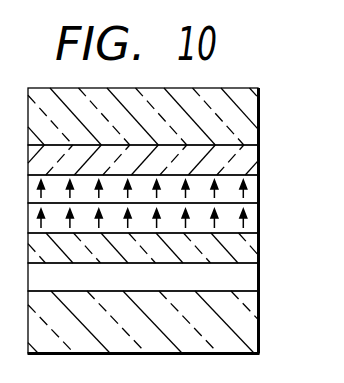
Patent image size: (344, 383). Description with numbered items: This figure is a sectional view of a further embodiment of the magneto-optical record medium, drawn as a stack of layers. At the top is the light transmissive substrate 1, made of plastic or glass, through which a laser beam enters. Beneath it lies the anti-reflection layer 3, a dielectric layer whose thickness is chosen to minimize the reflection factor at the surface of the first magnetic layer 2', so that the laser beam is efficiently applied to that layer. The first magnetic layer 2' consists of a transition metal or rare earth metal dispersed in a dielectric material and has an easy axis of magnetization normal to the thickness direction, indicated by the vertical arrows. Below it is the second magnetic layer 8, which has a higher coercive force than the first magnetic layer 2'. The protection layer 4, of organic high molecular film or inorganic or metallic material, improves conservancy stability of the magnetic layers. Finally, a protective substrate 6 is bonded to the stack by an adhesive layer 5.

The light transmissive substrate 1 is at (258, 121).
The anti-reflection layer 3 is at (258, 161).
The first magnetic layer 2' is at (177, 190).
The second magnetic layer 8 is at (258, 221).
The protection layer 4 is at (258, 253).
The adhesive layer 5 is at (258, 281).
The protective substrate 6 is at (258, 325).